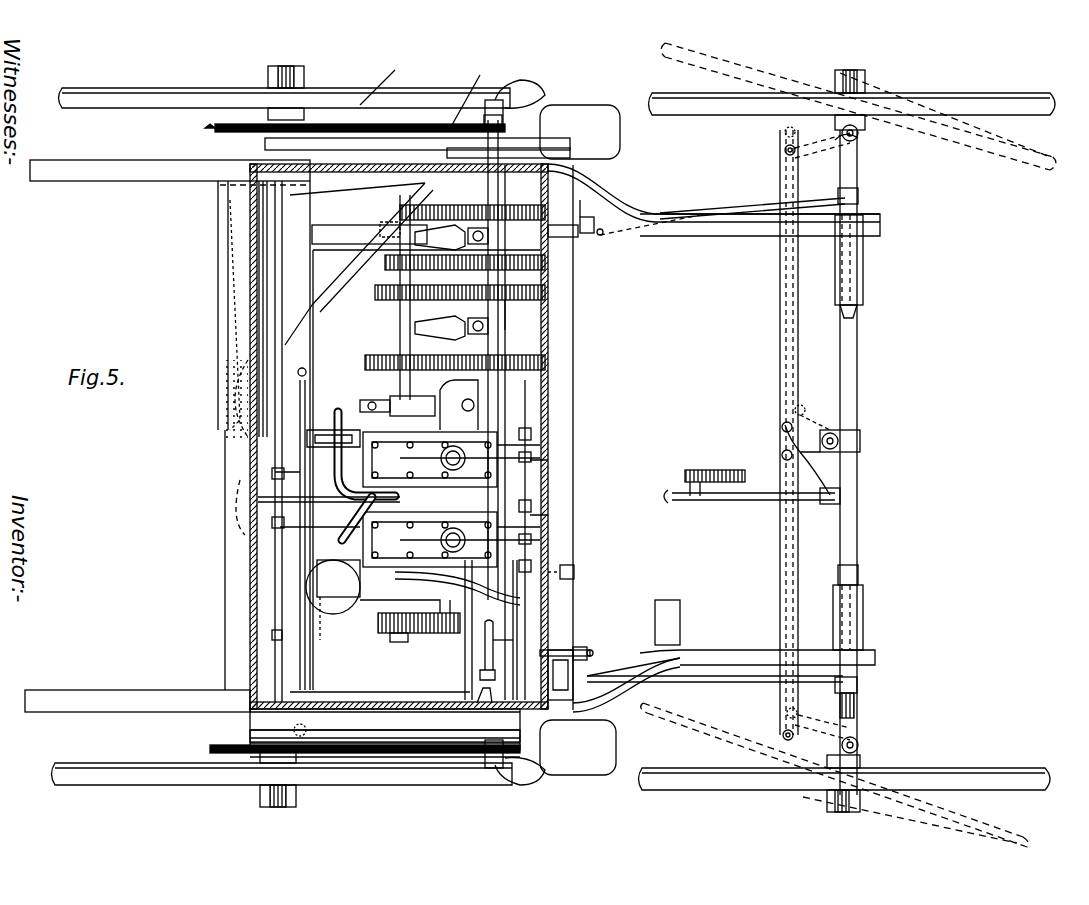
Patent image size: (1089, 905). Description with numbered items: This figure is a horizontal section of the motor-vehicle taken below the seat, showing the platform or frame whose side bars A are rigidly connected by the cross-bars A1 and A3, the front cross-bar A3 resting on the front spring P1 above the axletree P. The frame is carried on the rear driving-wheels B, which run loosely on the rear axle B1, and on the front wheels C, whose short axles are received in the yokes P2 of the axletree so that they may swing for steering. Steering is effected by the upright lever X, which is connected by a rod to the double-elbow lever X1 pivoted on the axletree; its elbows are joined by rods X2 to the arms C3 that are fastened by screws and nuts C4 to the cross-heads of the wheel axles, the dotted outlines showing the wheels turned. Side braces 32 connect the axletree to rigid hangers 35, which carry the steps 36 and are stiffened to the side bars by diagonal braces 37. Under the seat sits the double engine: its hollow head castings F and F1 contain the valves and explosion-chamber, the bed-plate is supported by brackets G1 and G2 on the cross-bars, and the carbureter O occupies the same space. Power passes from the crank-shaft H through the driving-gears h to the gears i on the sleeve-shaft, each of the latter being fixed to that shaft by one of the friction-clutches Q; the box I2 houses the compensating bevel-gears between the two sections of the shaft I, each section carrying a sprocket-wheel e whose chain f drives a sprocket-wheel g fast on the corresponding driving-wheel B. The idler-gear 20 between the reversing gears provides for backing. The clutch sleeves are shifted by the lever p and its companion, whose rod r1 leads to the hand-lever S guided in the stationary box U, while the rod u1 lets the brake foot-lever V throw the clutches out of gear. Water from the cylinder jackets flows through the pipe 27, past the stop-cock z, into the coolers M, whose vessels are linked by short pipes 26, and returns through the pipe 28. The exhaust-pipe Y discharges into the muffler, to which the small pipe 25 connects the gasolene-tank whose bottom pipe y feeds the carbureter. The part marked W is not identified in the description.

The side-bars of the platform A is at (135, 175).
The cross-bar of the platform A1 is at (305, 327).
The front cross-bar of the platform A3 is at (862, 285).
The driving-wheels B is at (140, 92).
The rear axle B1 is at (361, 247).
The front wheels C is at (862, 750).
The steering arms C3 is at (790, 725).
The screws and nuts C4 is at (862, 135).
The hollow castings F is at (451, 459).
The lower gear casing F1 is at (451, 558).
The bracket G1 is at (210, 600).
The engine-bracket G2 is at (540, 445).
The crank-shaft H is at (400, 385).
The shaft section I is at (478, 190).
The bevel-gear box I2 is at (459, 405).
The cooler M is at (395, 457).
The carbureter O is at (362, 615).
The axletree P is at (857, 395).
The front spring P1 is at (860, 195).
The yokes P2 is at (858, 715).
The friction-clutches Q is at (560, 225).
The hand-lever S is at (580, 690).
The stationary box U is at (560, 652).
The foot-lever V is at (530, 90).
The upper crossbar W is at (391, 83).
The steering-lever X is at (728, 470).
The double-elbow lever X1 is at (878, 457).
The steering rods X2 is at (774, 432).
The exhaust-pipe Y is at (240, 515).
The sprocket-wheel e is at (466, 93).
The chain f is at (205, 748).
The driving-wheel sprocket-wheel g is at (265, 143).
The driving-gears h is at (441, 309).
The sleeve-shaft gears i is at (520, 205).
The clutch lever p is at (451, 285).
The connecting-rod r1 is at (545, 625).
The brake-connection rod u1 is at (329, 488).
The gasolene pipe y is at (316, 625).
The stop-cock z is at (532, 505).
The idler-gear 20 is at (374, 216).
The small pipe 25 is at (260, 310).
The short pipes 26 is at (298, 723).
The water inlet pipe 27 is at (548, 322).
The water return pipe 28 is at (270, 476).
The side braces 32 is at (770, 215).
The hangers 35 is at (606, 438).
The steps 36 is at (580, 440).
The diagonal braces 37 is at (605, 235).